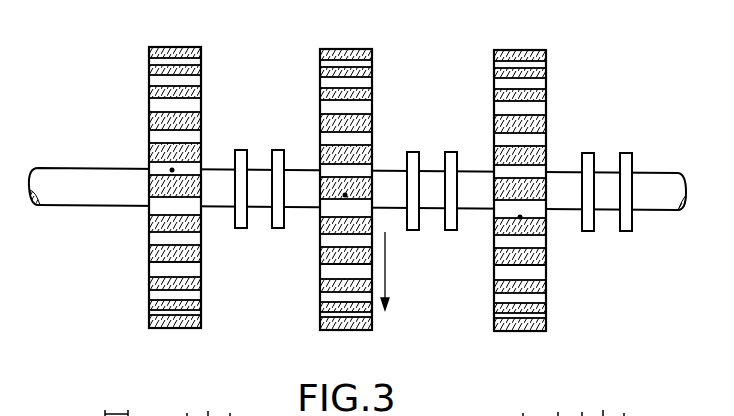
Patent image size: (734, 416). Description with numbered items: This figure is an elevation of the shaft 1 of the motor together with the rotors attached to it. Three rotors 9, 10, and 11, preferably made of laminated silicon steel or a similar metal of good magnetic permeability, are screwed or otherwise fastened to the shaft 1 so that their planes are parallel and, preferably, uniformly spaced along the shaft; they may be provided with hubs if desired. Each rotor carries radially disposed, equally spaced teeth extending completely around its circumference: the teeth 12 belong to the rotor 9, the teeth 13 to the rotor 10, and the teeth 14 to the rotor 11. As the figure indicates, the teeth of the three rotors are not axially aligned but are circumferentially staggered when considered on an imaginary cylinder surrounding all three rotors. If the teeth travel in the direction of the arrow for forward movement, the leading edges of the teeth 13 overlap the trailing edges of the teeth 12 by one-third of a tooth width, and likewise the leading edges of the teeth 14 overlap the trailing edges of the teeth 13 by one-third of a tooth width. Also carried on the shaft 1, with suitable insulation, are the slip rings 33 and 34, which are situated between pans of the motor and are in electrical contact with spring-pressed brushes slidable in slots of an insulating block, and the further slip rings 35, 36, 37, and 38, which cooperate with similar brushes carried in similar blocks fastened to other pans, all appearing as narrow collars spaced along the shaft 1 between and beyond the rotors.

The shaft 1 is at (666, 172).
The rotor 9 is at (172, 46).
The rotor 10 is at (360, 48).
The rotor 11 is at (531, 48).
The teeth 12 is at (148, 280).
The teeth 13 is at (316, 274).
The teeth 14 is at (492, 270).
The slip ring 33 is at (242, 148).
The slip ring 34 is at (281, 148).
The slip ring 35 is at (413, 150).
The slip ring 36 is at (452, 150).
The slip ring 37 is at (587, 151).
The slip ring 38 is at (626, 151).